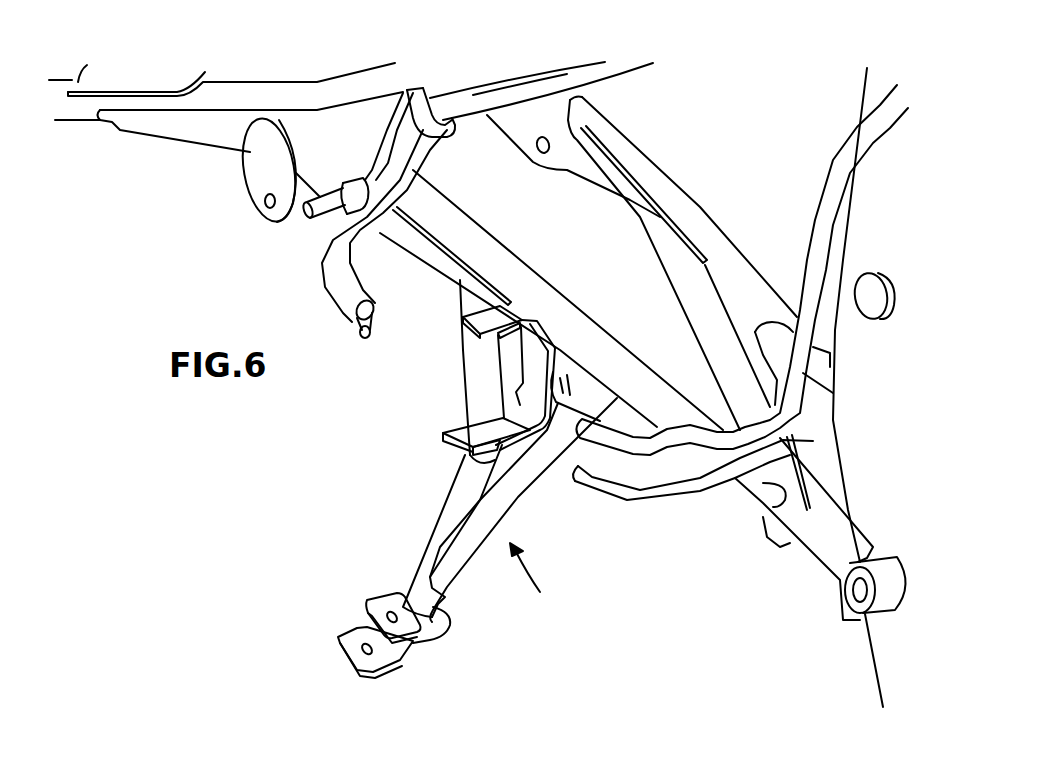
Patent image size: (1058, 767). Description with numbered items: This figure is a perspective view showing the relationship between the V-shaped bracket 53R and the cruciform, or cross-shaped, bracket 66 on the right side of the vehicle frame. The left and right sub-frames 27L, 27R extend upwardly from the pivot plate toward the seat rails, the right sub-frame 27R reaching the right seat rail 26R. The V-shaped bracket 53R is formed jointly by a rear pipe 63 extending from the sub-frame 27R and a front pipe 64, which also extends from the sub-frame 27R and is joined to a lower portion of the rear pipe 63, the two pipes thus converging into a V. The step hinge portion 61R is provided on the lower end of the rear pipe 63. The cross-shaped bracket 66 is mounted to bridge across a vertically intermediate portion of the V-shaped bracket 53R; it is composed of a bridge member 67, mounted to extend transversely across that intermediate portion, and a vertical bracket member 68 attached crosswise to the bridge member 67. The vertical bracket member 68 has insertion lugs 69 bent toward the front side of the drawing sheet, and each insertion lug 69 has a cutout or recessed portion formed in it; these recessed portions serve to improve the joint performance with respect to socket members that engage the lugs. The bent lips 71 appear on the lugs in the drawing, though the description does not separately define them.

The right seat rail 26R is at (360, 80).
The left sub-frame 27L is at (723, 232).
The right sub-frame 27R is at (560, 297).
The V-shaped bracket 53R is at (544, 579).
The step hinge portion 61R is at (347, 630).
The rear pipe 63 is at (443, 515).
The front pipe 64 is at (523, 497).
The cross-shaped bracket 66 is at (449, 395).
The bridge member 67 is at (575, 365).
The vertical bracket member 68 is at (527, 390).
The insertion lugs 69 is at (485, 332).
The bent lip 71 is at (493, 338).